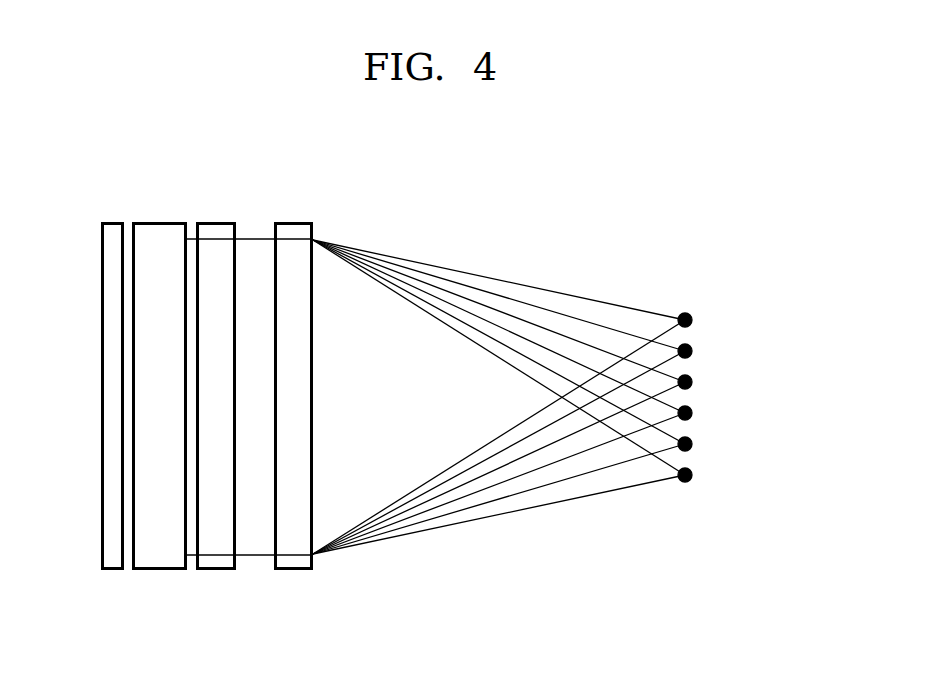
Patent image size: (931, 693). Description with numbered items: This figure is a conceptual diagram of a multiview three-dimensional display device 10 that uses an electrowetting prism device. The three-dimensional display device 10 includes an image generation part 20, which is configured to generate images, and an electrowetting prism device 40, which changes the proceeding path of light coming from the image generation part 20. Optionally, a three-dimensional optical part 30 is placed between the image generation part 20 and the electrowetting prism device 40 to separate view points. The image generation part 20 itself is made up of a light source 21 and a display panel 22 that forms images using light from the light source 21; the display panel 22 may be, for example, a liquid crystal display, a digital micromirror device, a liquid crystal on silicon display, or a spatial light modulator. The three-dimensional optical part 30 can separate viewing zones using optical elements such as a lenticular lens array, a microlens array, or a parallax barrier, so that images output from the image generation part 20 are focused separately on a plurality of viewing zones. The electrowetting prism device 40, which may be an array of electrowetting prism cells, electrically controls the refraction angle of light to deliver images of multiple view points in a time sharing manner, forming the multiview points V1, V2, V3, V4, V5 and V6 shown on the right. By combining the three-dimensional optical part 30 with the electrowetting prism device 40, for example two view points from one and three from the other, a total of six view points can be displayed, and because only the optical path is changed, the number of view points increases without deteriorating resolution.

The 3D display device 10 is at (262, 213).
The image generation part 20 is at (141, 446).
The light source 21 is at (110, 571).
The display panel 22 is at (160, 426).
The 3D optical part 30 is at (221, 571).
The electrowetting prism device 40 is at (294, 571).
The view point V1 is at (692, 321).
The view point V2 is at (692, 352).
The view point V3 is at (692, 383).
The view point V4 is at (692, 414).
The view point V5 is at (692, 445).
The view point V6 is at (692, 476).